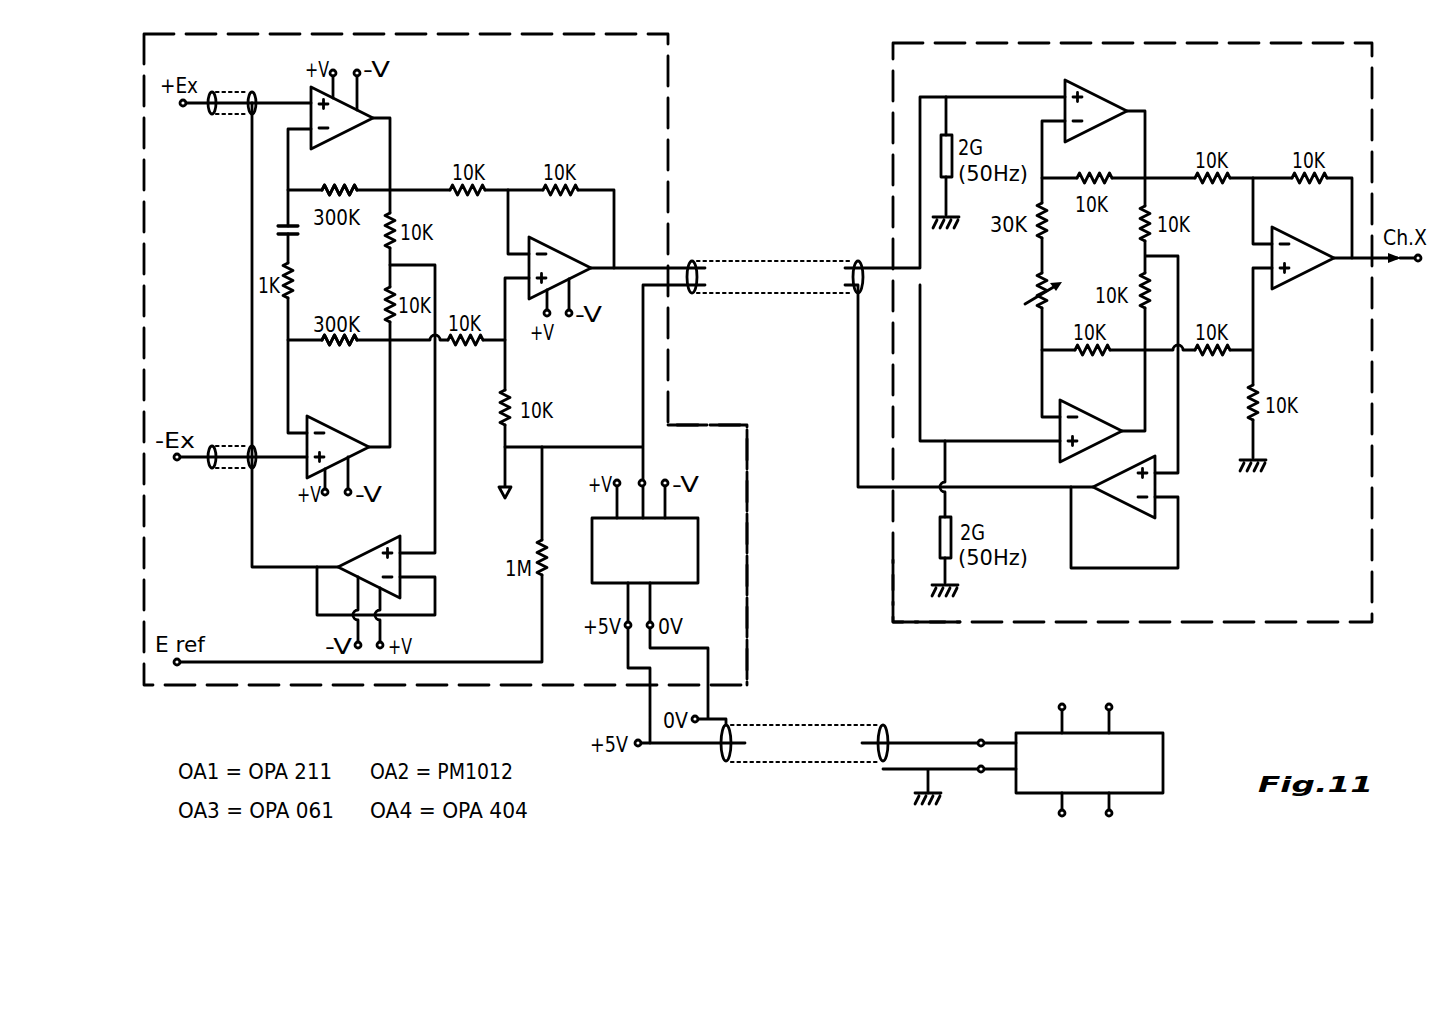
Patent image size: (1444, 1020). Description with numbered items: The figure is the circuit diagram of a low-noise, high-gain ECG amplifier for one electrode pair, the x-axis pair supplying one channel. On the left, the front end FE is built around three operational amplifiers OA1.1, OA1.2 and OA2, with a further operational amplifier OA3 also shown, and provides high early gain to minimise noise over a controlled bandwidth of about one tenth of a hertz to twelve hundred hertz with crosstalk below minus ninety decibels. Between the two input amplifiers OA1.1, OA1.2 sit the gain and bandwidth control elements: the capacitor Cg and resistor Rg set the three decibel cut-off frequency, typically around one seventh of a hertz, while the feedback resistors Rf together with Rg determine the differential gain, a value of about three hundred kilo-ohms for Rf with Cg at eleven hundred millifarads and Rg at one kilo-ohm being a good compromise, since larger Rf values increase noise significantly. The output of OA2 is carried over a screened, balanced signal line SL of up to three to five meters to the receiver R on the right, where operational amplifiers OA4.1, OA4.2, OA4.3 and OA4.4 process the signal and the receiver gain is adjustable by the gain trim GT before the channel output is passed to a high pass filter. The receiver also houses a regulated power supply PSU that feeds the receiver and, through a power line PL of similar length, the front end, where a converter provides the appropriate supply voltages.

The operational amplifier OA1.1 is at (365, 109).
The operational amplifier OA1.2 is at (346, 434).
The operational amplifier OA2 is at (571, 257).
The operational amplifier OA3 is at (373, 553).
The operational amplifier OA4.1 is at (1100, 92).
The operational amplifier OA4.2 is at (1093, 415).
The operational amplifier OA4.3 is at (1127, 506).
The operational amplifier OA4.4 is at (1312, 271).
The feedback resistor Rf is at (339, 268).
The gain resistor Rg is at (303, 281).
The gain capacitor Cg is at (242, 212).
The gain trim GT is at (1031, 290).
The signal line SL is at (775, 278).
The power line PL is at (804, 744).
The front end FE is at (747, 645).
The receiver R is at (893, 614).
The regulated power supply PSU is at (1014, 755).